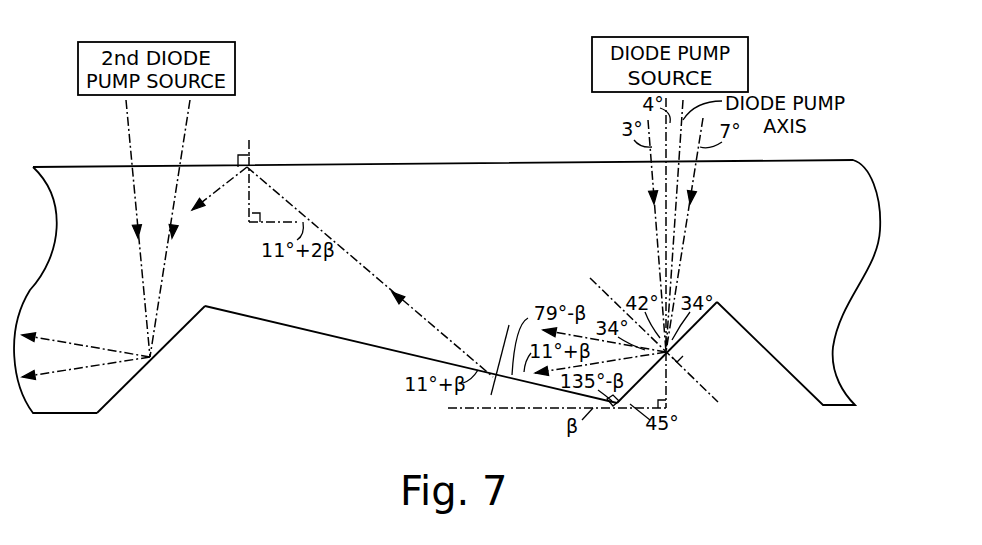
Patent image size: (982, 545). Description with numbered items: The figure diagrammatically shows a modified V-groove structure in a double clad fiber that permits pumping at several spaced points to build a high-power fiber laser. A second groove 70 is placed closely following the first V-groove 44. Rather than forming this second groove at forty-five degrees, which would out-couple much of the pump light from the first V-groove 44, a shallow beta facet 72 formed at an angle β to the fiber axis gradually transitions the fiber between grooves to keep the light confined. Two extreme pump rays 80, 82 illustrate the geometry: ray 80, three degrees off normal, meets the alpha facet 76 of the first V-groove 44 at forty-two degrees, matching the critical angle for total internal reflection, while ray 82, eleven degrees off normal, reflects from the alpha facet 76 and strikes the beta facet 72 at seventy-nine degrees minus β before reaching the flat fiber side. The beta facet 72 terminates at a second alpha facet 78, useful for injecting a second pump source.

The second groove 70 is at (243, 353).
The beta facet 72 is at (270, 321).
The alpha facet 76 is at (700, 320).
The second alpha facet 78 is at (130, 383).
The ray 80 is at (657, 236).
The ray 82 is at (356, 254).
The first V-groove 44 is at (750, 403).